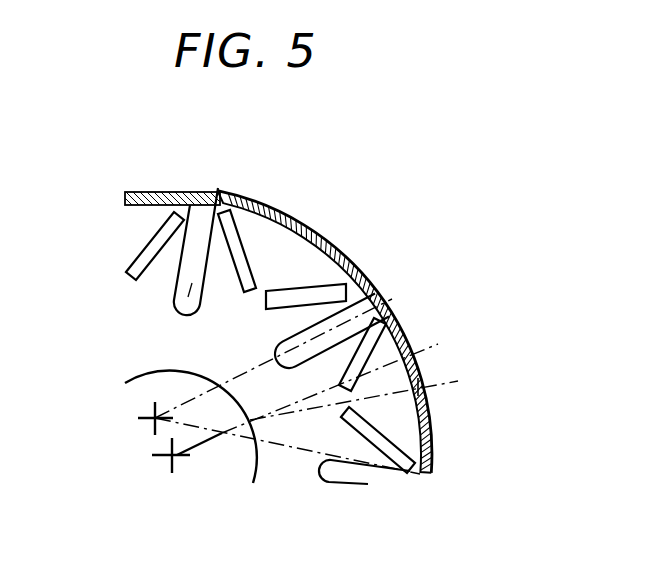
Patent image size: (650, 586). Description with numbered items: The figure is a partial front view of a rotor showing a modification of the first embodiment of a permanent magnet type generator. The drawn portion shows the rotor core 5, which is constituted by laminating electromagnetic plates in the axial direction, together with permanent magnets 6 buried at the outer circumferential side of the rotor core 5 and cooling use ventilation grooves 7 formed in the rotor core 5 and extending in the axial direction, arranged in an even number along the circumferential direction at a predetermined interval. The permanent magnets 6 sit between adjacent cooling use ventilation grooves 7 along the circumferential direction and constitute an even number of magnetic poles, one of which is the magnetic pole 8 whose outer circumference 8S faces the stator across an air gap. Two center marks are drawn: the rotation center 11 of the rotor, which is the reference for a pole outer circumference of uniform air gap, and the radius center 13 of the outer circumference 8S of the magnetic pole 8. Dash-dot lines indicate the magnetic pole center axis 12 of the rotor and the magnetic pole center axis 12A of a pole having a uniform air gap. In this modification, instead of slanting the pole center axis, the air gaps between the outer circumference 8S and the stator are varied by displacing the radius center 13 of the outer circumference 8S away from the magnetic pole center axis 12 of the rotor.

The rotor core 5 is at (143, 218).
The permanent magnets 6 is at (137, 257).
The cooling use ventilation grooves 7 is at (181, 303).
The magnetic pole 8 is at (303, 254).
The outer circumference 8S is at (248, 202).
The rotation center 11 is at (175, 460).
The magnetic pole center axis 12 is at (446, 382).
The magnetic pole center axis 12A is at (438, 344).
The radius center 13 is at (153, 418).